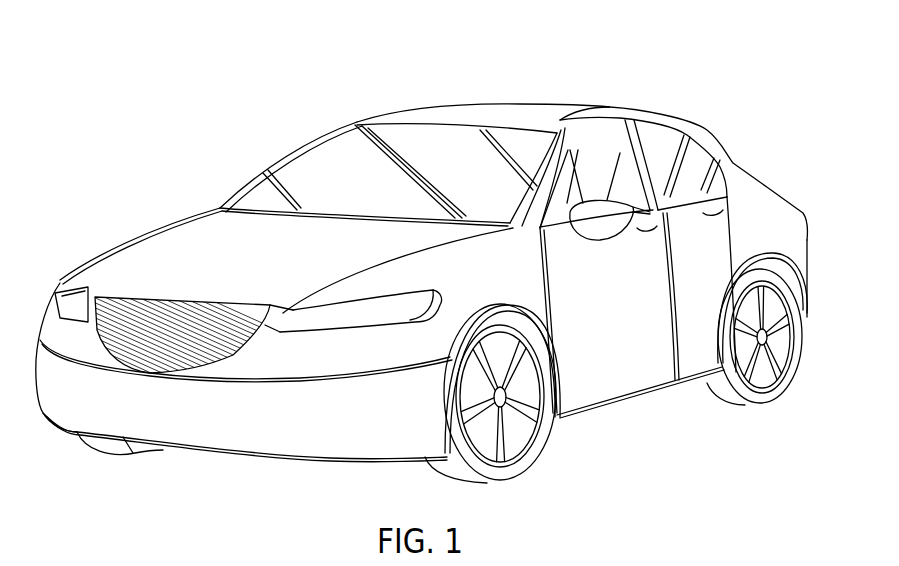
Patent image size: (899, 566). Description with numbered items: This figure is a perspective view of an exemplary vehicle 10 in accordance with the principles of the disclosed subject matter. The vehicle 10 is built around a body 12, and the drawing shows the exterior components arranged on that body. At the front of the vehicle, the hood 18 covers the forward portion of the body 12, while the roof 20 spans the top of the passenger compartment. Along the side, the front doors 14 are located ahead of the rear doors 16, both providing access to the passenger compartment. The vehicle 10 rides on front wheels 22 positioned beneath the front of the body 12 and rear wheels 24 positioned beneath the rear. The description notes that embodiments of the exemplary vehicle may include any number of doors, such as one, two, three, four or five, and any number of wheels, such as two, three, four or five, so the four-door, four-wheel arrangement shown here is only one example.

The vehicle 10 is at (267, 145).
The body 12 is at (318, 462).
The front doors 14 is at (603, 383).
The rear doors 16 is at (687, 358).
The hood 18 is at (147, 250).
The roof 20 is at (527, 113).
The front wheels 22 is at (528, 453).
The rear wheels 24 is at (777, 383).